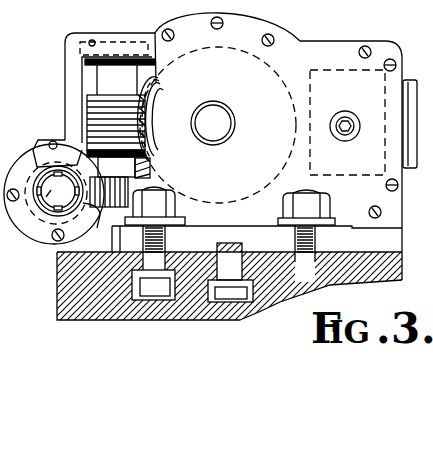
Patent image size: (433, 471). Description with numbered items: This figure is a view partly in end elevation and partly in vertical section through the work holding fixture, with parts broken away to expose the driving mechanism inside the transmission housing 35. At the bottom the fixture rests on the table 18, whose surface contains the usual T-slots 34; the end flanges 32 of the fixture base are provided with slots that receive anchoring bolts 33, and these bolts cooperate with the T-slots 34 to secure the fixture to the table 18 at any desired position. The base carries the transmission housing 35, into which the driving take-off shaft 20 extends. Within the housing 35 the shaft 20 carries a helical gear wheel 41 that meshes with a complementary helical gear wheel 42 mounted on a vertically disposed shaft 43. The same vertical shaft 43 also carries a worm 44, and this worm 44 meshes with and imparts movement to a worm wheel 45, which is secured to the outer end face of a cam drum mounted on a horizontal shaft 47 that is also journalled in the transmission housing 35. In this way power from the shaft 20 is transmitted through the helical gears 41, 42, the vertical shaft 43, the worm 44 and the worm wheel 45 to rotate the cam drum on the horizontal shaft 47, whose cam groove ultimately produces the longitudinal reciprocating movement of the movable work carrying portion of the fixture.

The table 18 is at (75, 297).
The driving take-off shaft 20 is at (38, 213).
The end flanges 32 is at (229, 228).
The anchoring bolts 33 is at (166, 239).
The T-slots 34 is at (158, 280).
The transmission housing 35 is at (320, 42).
The helical gear wheel 41 is at (41, 140).
The complementary helical gear wheel 42 is at (130, 167).
The vertically disposed shaft 43 is at (151, 163).
The worm 44 is at (115, 112).
The worm wheel 45 is at (158, 95).
The horizontal shaft 47 is at (215, 118).